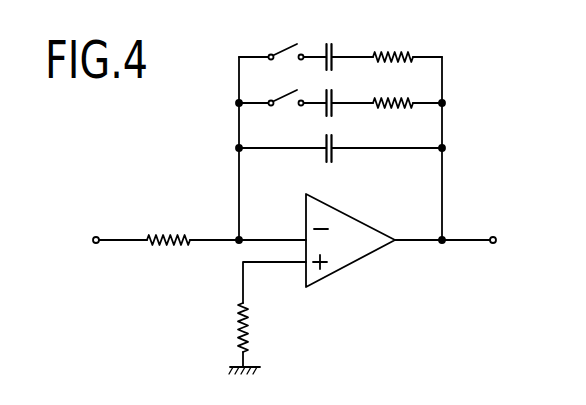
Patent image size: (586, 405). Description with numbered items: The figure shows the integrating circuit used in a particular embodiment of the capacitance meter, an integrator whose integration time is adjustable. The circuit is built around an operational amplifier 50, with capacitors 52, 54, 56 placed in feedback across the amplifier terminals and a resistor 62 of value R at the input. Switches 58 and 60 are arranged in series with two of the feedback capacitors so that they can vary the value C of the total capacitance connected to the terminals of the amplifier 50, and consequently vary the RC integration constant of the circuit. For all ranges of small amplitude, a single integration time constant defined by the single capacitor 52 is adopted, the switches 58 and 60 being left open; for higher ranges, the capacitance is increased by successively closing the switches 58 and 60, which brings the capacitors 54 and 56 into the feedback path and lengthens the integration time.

The operational amplifier 50 is at (358, 251).
The capacitor 52 is at (333, 156).
The capacitor 54 is at (333, 108).
The capacitor 56 is at (334, 53).
The switch 58 is at (294, 30).
The switch 60 is at (288, 115).
The resistor 62 is at (158, 238).